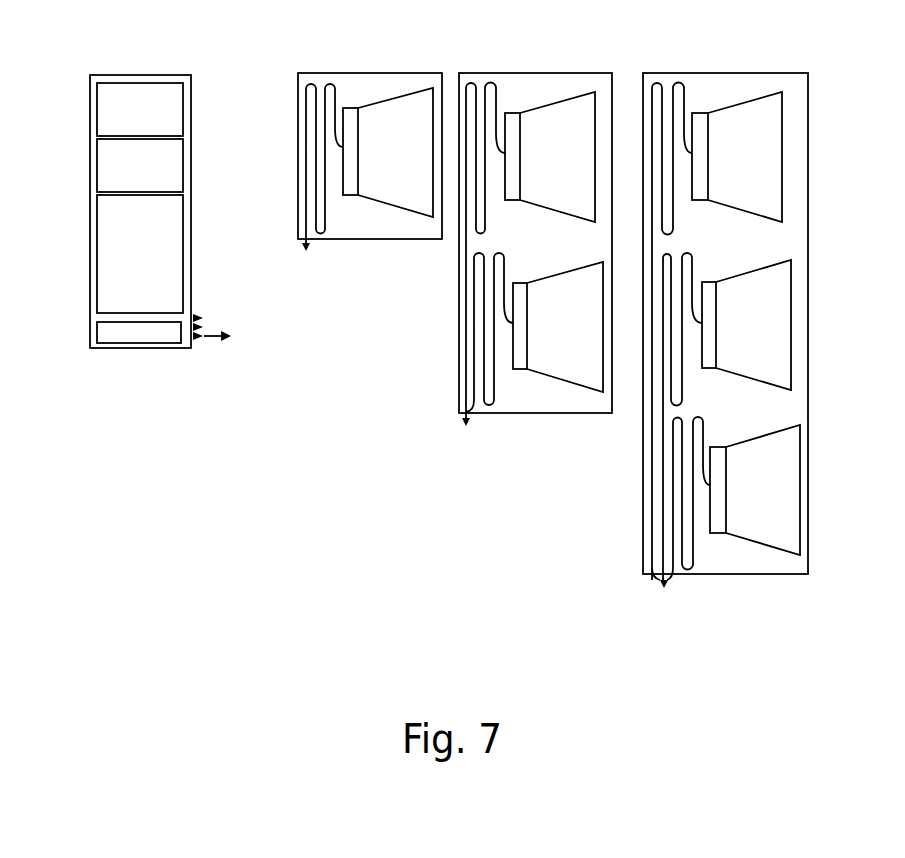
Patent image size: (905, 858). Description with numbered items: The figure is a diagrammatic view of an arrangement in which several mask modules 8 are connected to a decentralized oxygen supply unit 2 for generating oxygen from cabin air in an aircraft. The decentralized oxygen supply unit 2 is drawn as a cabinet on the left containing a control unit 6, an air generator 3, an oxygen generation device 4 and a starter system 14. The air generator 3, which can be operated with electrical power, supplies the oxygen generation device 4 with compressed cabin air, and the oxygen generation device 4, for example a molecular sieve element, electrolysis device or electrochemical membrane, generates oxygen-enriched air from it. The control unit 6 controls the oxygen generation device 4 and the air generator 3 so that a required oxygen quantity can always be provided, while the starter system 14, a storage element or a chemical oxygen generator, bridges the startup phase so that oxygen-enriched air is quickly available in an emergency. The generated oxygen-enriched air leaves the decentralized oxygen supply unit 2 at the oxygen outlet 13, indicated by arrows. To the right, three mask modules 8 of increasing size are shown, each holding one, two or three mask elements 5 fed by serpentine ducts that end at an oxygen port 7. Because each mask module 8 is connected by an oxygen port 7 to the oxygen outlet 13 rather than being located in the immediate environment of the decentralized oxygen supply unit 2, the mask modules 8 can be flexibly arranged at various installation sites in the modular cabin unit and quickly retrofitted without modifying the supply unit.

The decentralized oxygen supply unit 2 is at (153, 351).
The air generator 3 is at (121, 167).
The oxygen generation device 4 is at (121, 255).
The mask element 5 is at (571, 321).
The control unit 6 is at (121, 109).
The oxygen port 7 is at (313, 253).
The mask module 8 is at (378, 86).
The oxygen outlet 13 is at (217, 316).
The starter system 14 is at (121, 336).